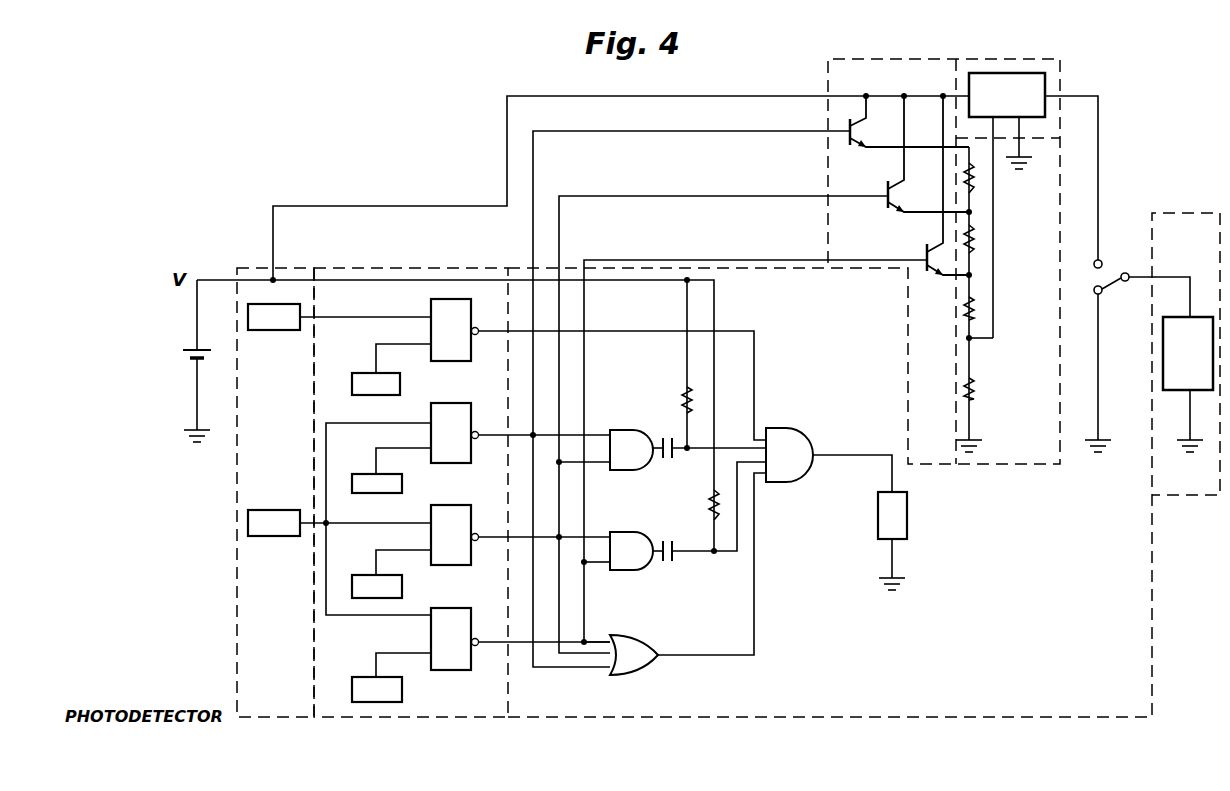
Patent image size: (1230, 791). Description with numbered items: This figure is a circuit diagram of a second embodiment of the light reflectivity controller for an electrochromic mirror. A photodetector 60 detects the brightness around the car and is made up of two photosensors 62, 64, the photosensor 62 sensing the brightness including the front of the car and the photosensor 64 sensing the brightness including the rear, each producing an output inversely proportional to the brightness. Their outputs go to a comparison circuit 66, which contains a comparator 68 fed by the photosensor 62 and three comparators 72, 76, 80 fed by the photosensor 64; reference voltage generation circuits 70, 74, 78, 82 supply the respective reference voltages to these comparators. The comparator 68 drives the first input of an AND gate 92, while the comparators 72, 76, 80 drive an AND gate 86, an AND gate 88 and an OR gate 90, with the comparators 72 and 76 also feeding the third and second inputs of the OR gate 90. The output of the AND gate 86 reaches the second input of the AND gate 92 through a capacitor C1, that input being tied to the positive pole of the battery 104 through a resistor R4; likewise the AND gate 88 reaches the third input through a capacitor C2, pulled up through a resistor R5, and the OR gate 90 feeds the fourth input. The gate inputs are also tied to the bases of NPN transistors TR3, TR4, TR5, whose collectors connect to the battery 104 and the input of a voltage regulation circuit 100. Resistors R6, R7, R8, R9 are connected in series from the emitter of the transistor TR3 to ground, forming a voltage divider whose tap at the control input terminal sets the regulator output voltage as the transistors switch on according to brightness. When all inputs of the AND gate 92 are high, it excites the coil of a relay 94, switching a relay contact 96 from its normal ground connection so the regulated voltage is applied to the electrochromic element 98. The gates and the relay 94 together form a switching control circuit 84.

The photodetector 60 is at (237, 657).
The photosensor 62 is at (248, 243).
The photosensor 64 is at (222, 506).
The comparison circuit 66 is at (346, 268).
The comparator 68 is at (452, 305).
The reference voltage generation circuit 70 is at (362, 380).
The comparator 72 is at (410, 410).
The reference voltage generation circuit 74 is at (415, 512).
The comparator 76 is at (452, 512).
The reference voltage generation circuit 78 is at (362, 580).
The comparator 80 is at (458, 614).
The reference voltage generation circuit 82 is at (364, 682).
The switching control circuit 84 is at (588, 717).
The AND gate 86 is at (628, 472).
The AND gate 88 is at (628, 573).
The OR gate 90 is at (635, 668).
The AND gate 92 is at (793, 468).
The relay 94 is at (907, 518).
The relay contact 96 is at (1113, 283).
The electrochromic element 98 is at (1175, 365).
The voltage regulation circuit 100 is at (1050, 88).
The battery (power source) 104 is at (183, 368).
The transistor TR3 is at (904, 136).
The transistor TR4 is at (923, 165).
The transistor TR5 is at (940, 200).
The resistor R4 is at (673, 392).
The resistor R5 is at (699, 505).
The resistor R6 is at (980, 180).
The resistor R7 is at (980, 236).
The resistor R8 is at (980, 308).
The resistor R9 is at (986, 389).
The capacitor C1 is at (671, 459).
The capacitor C2 is at (671, 564).